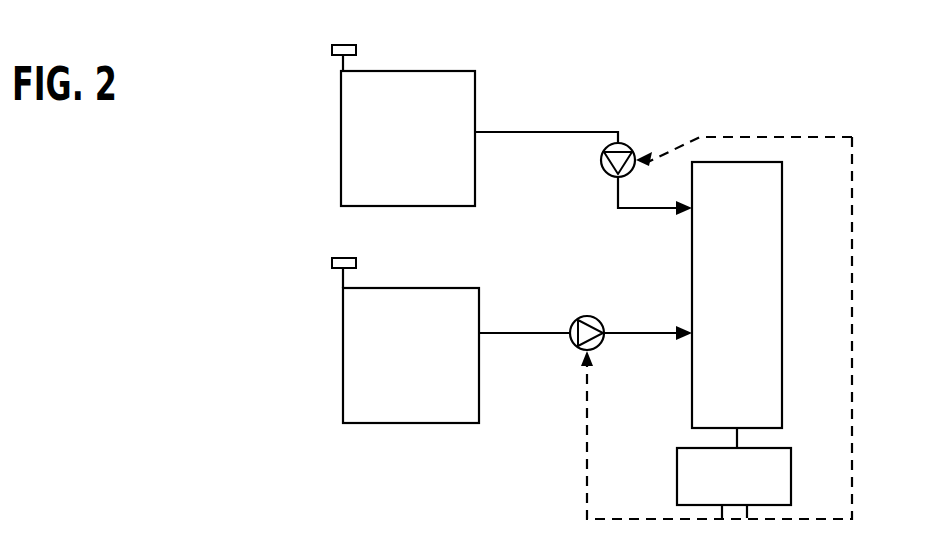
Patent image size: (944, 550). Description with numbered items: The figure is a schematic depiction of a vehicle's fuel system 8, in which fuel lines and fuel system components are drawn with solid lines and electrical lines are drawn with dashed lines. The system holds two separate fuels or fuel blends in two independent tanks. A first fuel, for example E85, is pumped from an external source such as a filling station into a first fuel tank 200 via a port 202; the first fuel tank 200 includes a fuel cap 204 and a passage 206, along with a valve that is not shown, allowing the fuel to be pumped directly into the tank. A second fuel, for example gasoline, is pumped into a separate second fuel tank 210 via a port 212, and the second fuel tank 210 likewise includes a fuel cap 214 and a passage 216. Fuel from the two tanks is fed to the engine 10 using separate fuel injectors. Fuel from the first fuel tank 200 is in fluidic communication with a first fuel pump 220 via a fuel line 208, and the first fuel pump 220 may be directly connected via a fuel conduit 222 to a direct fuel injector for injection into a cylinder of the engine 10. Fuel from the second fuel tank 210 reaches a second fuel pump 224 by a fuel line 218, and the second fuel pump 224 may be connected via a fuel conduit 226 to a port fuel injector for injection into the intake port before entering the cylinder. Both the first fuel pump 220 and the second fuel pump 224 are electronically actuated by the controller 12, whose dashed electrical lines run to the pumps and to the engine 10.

The fuel system 8 is at (258, 90).
The engine 10 is at (778, 207).
The controller 12 is at (785, 477).
The first fuel tank 200 is at (476, 91).
The port 202 is at (343, 54).
The fuel cap 204 is at (333, 52).
The passage 206 is at (343, 68).
The fuel line 208 is at (563, 134).
The second fuel tank 210 is at (480, 294).
The port 212 is at (343, 267).
The fuel cap 214 is at (333, 265).
The passage 216 is at (343, 285).
The fuel line 218 is at (551, 336).
The first fuel pump 220 is at (624, 148).
The fuel conduit 222 is at (655, 205).
The second fuel pump 224 is at (594, 320).
The fuel conduit 226 is at (648, 345).